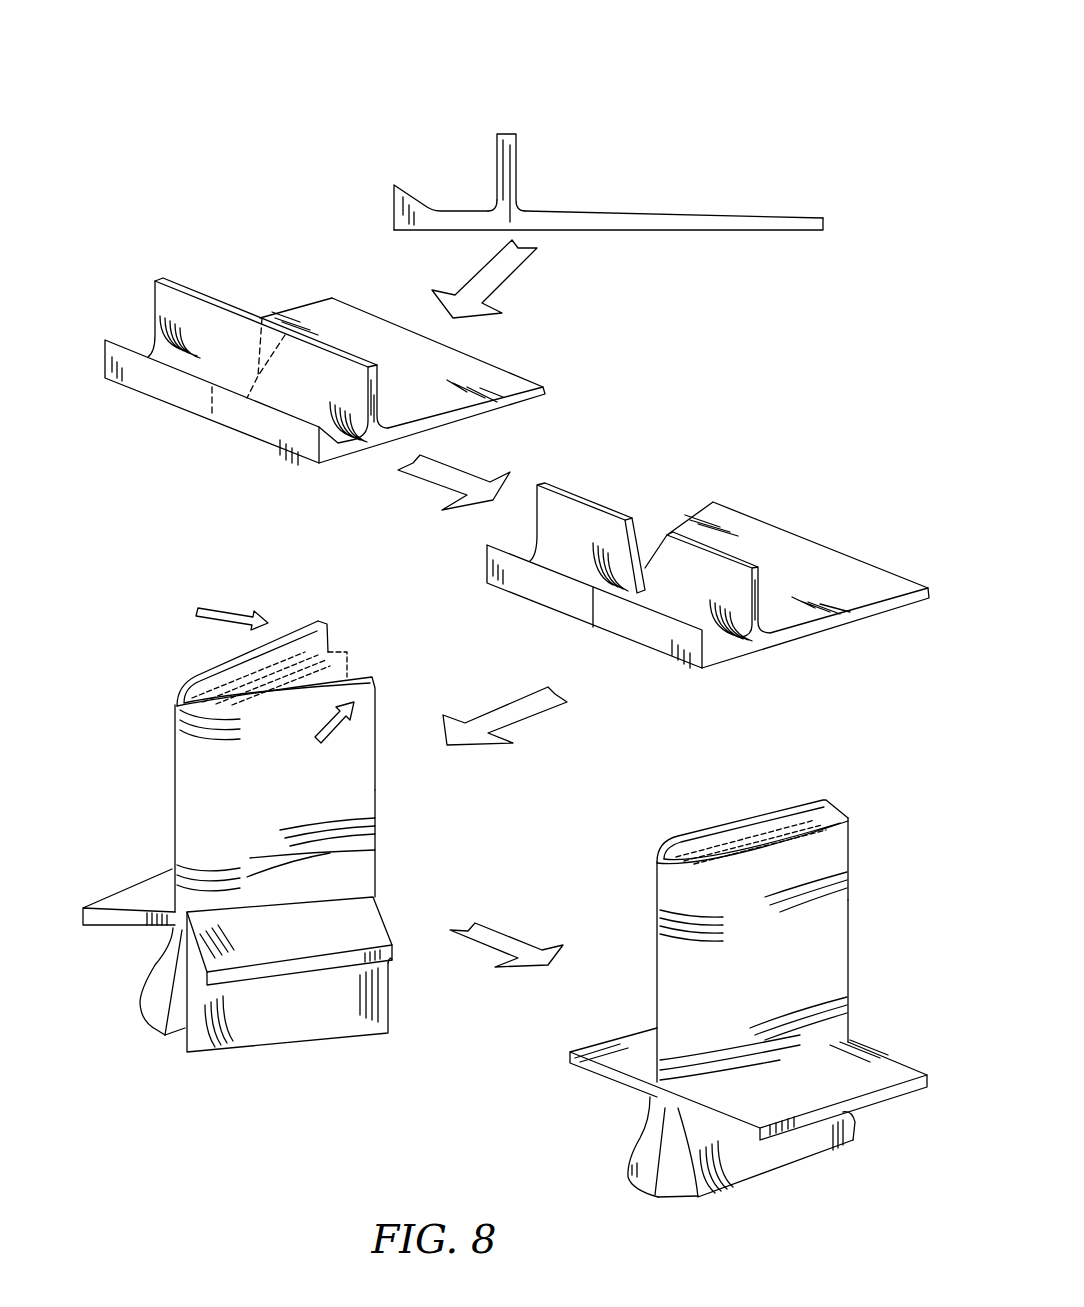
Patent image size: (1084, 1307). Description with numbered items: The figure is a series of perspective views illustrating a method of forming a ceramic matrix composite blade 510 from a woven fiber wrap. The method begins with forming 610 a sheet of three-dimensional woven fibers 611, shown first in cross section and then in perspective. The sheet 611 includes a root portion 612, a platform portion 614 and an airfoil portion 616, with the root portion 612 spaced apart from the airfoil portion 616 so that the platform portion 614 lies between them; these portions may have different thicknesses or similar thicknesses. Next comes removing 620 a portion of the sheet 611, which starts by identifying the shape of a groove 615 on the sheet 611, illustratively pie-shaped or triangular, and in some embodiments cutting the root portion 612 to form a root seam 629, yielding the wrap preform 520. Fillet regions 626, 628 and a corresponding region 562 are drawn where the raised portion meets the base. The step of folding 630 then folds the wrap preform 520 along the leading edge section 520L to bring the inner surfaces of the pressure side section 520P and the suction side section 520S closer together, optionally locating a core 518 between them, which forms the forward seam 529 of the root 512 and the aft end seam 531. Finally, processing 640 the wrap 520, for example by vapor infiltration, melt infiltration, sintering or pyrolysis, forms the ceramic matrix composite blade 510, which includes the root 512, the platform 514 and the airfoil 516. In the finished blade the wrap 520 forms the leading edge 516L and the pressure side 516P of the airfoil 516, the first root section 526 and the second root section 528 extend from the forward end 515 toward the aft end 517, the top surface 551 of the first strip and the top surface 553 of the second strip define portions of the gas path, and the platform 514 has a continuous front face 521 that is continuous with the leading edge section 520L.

The ceramic matrix composite blade 510 is at (693, 777).
The root 512 is at (633, 625).
The platform 514 is at (585, 496).
The forward end 515 is at (152, 1030).
The airfoil 516 is at (741, 541).
The leading edge 516L is at (660, 918).
The pressure side 516P is at (824, 938).
The aft end 517 is at (395, 1002).
The core 518 is at (275, 661).
The wrap 520 is at (838, 517).
The leading edge section 520L is at (175, 763).
The pressure side section 520P is at (338, 802).
The suction side section 520S is at (173, 716).
The front face 521 is at (578, 1062).
The first root section 526 is at (270, 1010).
The second root section 528 is at (560, 557).
The forward seam 529 is at (178, 995).
The aft end seam 531 is at (376, 678).
The top surface 551 is at (367, 940).
The top surface 553 is at (140, 895).
The fillet region 562 is at (716, 621).
The forming step 610 is at (420, 70).
The sheet of three-dimensional woven fibers 611 is at (462, 131).
The root portion 612 is at (418, 192).
The platform portion 614 is at (507, 126).
The groove 615 is at (260, 325).
The airfoil portion 616 is at (730, 213).
The removing step 620 is at (628, 153).
The near fillet 626 is at (343, 428).
The far fillet 628 is at (163, 307).
The root seam 629 is at (210, 410).
The folding step 630 is at (125, 717).
The processing step 640 is at (875, 800).